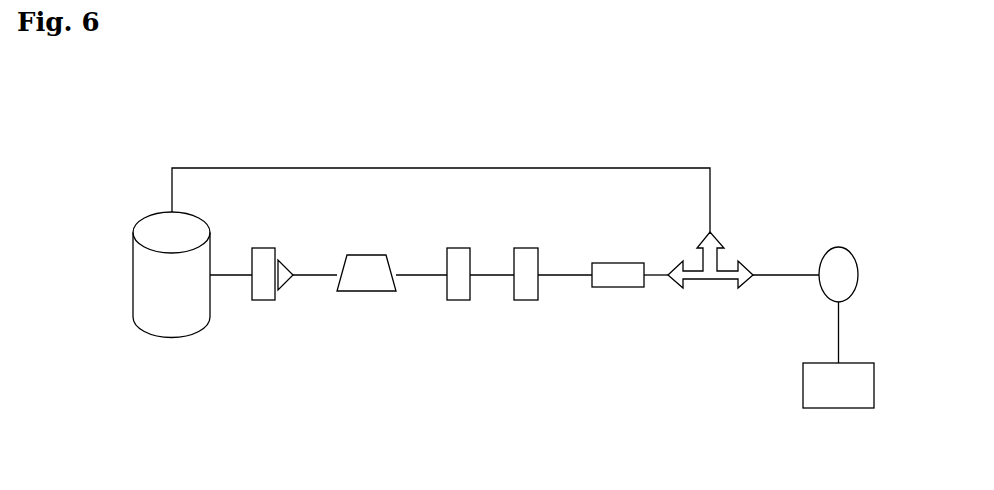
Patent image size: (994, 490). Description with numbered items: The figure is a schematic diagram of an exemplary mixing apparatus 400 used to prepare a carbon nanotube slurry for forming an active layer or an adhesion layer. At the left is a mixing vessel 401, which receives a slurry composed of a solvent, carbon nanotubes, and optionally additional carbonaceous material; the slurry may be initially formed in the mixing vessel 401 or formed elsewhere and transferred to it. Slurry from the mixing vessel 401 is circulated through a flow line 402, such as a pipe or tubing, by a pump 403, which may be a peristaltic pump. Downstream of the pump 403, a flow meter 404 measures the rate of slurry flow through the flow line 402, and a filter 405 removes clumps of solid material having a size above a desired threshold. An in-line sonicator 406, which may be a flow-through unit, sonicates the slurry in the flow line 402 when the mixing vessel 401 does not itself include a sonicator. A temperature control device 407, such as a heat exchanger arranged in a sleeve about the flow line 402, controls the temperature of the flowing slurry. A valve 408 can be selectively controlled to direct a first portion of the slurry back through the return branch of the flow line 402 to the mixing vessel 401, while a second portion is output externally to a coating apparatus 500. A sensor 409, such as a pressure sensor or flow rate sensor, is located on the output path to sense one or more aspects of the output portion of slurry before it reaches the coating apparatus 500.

The mixing apparatus 400 is at (191, 116).
The mixing vessel 401 is at (171, 292).
The flow line 402 is at (308, 168).
The pump 403 is at (270, 291).
The flow meter 404 is at (366, 294).
The filter 405 is at (459, 290).
The in-line sonicator 406 is at (527, 290).
The temperature control device 407 is at (618, 298).
The valve 408 is at (710, 282).
The sensor 409 is at (838, 288).
The coating apparatus 500 is at (838, 403).